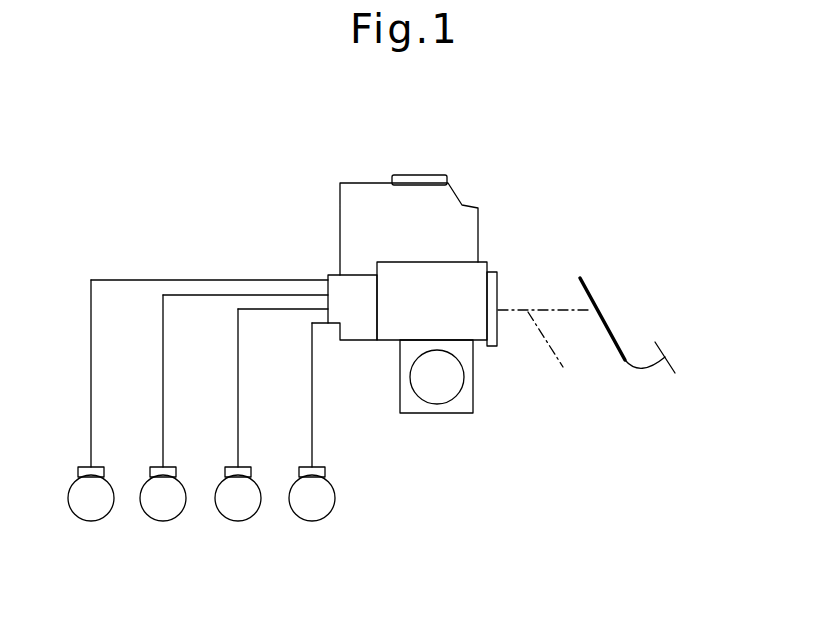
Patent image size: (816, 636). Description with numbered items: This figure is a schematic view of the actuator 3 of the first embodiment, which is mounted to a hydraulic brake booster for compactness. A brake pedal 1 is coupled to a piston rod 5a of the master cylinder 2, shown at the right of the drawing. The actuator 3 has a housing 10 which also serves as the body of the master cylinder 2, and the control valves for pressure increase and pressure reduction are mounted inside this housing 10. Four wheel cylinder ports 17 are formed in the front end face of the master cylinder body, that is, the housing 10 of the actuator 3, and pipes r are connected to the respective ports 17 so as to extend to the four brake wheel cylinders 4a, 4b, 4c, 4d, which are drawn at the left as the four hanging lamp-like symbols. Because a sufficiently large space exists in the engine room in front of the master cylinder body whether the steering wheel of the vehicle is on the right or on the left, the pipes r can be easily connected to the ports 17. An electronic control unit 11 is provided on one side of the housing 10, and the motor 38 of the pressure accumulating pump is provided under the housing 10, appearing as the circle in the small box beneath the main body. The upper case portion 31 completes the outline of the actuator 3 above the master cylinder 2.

The brake pedal 1 is at (590, 288).
The master cylinder 2 is at (347, 300).
The actuator 3 is at (481, 298).
The brake wheel cylinder 4a is at (92, 495).
The brake wheel cylinder 4b is at (160, 497).
The brake wheel cylinder 4c is at (238, 497).
The brake wheel cylinder 4d is at (312, 497).
The piston rod 5a is at (550, 352).
The housing 10 is at (360, 332).
The electronic control unit 11 is at (455, 330).
The wheel cylinder ports 17 is at (325, 310).
The switch case 31 is at (470, 239).
The motor 38 is at (437, 390).
The pipes r is at (312, 325).